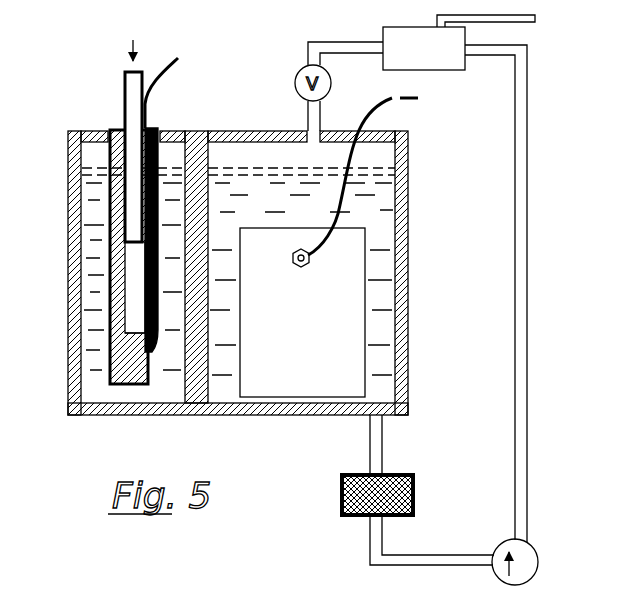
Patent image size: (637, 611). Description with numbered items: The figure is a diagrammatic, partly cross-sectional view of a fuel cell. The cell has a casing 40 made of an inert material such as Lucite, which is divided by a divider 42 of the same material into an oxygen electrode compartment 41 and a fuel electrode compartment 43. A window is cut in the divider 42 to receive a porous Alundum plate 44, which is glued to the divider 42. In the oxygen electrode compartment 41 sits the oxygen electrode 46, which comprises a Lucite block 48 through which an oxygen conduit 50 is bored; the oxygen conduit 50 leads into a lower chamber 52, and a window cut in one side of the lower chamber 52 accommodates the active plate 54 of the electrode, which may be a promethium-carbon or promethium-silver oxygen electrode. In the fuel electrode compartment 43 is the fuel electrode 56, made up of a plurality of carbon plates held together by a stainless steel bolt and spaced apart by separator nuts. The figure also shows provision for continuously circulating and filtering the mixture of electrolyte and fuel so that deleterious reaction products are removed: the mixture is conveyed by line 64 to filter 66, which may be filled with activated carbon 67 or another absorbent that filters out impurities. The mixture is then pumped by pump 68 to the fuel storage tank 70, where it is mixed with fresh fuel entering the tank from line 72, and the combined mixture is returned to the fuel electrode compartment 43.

The casing 40 is at (404, 337).
The oxygen electrode compartment 41 is at (90, 129).
The divider 42 is at (188, 129).
The fuel electrode compartment 43 is at (233, 166).
The porous Alundum plate 44 is at (186, 176).
The oxygen electrode 46 is at (105, 360).
The Lucite block 48 is at (124, 129).
The oxygen conduit 50 is at (130, 196).
The lower chamber 52 is at (130, 277).
The active plate 54 is at (130, 303).
The fuel electrode 56 is at (368, 361).
The line 64 is at (383, 458).
The filter 66 is at (415, 503).
The activated carbon 67 is at (357, 516).
The pump 68 is at (538, 565).
The fuel storage tank 70 is at (465, 56).
The line 72 is at (523, 23).